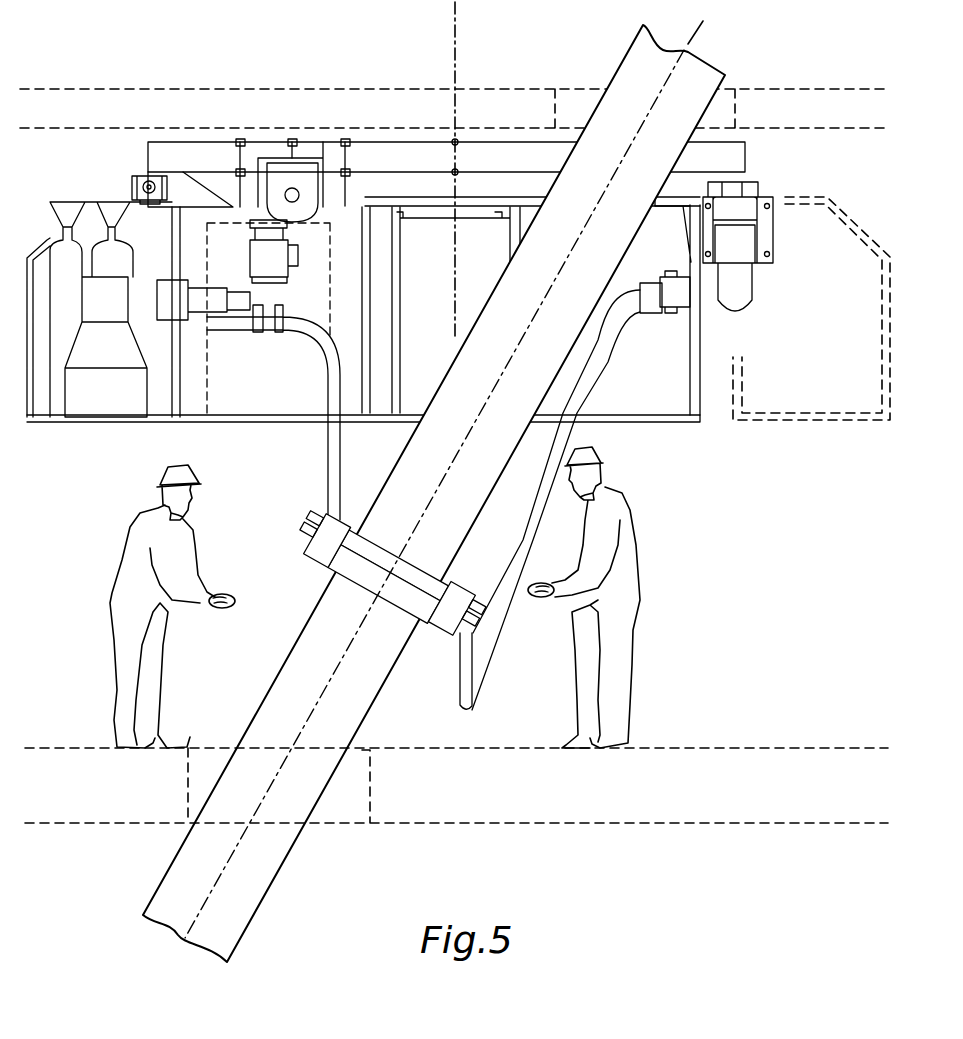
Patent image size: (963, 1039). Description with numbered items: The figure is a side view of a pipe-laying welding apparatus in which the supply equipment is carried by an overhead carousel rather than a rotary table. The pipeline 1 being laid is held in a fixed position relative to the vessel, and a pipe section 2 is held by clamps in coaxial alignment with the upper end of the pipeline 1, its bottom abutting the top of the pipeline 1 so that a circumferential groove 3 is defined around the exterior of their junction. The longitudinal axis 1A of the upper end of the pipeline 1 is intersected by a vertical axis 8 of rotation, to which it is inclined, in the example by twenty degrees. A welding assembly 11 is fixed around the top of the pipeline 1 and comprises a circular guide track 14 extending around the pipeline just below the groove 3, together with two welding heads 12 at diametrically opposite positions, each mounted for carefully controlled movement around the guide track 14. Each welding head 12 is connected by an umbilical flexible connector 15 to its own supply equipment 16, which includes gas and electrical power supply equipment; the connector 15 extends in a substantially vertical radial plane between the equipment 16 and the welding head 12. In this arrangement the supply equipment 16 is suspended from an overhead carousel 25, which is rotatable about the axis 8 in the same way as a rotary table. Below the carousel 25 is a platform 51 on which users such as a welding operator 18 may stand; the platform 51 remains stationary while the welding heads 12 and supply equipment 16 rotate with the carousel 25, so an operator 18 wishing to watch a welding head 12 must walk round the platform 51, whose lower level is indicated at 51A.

The pipeline 1 is at (248, 907).
The longitudinal axis 1A is at (693, 42).
The pipe section 2 is at (628, 83).
The circumferential groove 3 is at (417, 572).
The vertical axis 8 is at (455, 46).
The welding assembly 11 is at (389, 620).
The welding head 12 is at (304, 531).
The guide track 14 is at (352, 584).
The umbilical flexible connector 15 is at (327, 455).
The supply equipment 16 is at (78, 424).
The welding operator 18 is at (625, 577).
The overhead carousel 25 is at (688, 424).
The platform 51 is at (718, 747).
The lower deck line 51A is at (350, 812).